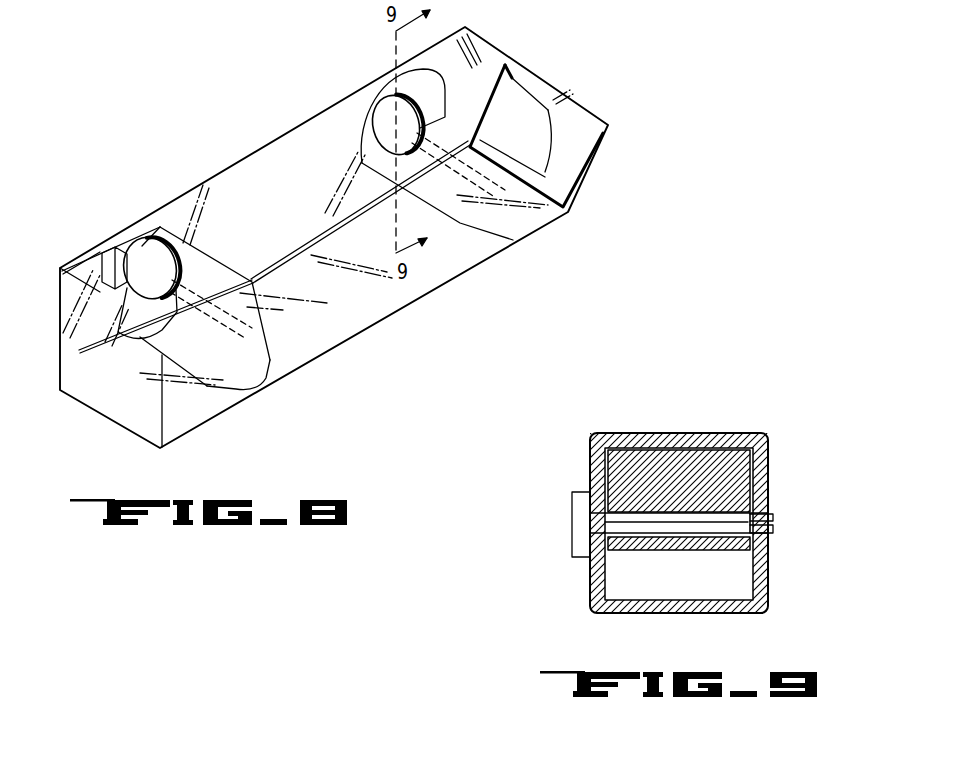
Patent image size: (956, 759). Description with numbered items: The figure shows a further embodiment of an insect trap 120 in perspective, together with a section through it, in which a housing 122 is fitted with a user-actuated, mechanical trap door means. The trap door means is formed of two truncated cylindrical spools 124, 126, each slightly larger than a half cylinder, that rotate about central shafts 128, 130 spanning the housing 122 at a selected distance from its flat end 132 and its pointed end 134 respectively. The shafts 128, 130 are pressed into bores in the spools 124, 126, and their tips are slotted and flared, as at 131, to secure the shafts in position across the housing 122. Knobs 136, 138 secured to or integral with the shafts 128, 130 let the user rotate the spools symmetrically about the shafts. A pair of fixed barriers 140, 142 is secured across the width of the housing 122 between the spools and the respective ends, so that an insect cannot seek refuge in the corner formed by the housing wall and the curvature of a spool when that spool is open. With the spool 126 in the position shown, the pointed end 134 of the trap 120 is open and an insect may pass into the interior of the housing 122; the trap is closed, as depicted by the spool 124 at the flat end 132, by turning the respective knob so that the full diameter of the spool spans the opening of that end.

In FIG. 8, the insect trap 120 is at (281, 133).
In FIG. 9, the insect trap 120 is at (737, 426).
In FIG. 8, the housing 122 is at (308, 115).
In FIG. 9, the housing 122 is at (678, 432).
In FIG. 8, the truncated spool 124 is at (200, 258).
In FIG. 8, the truncated spool 126 is at (540, 149).
In FIG. 9, the truncated spool 126 is at (718, 552).
In FIG. 8, the central shaft 128 is at (258, 332).
In FIG. 8, the central shaft 130 is at (480, 178).
In FIG. 9, the central shaft 130 is at (718, 521).
In FIG. 9, the slotted and flared tip 131 is at (773, 516).
In FIG. 8, the flat end 132 is at (71, 253).
In FIG. 8, the pointed end 134 is at (478, 24).
In FIG. 8, the knob 136 is at (148, 250).
In FIG. 8, the knob 138 is at (377, 132).
In FIG. 9, the knob 138 is at (572, 516).
In FIG. 8, the fixed barrier 140 is at (117, 262).
In FIG. 8, the fixed barrier 142 is at (520, 90).